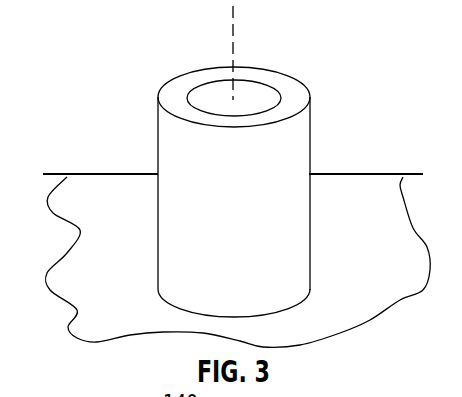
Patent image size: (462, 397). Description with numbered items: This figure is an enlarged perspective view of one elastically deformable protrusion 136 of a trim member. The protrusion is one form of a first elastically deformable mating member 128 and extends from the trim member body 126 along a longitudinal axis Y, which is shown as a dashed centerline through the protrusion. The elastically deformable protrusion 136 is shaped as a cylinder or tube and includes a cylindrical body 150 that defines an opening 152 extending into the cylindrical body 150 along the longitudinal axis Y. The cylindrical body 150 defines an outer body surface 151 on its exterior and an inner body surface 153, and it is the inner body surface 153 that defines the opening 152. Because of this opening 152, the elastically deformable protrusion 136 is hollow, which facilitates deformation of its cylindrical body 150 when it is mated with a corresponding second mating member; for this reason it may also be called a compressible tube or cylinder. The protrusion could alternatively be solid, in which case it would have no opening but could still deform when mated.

The longitudinal axis Y is at (238, 28).
The trim member body 126 is at (100, 173).
The first elastically deformable mating member 128 is at (310, 145).
The elastically deformable protrusion 136 is at (158, 141).
The cylindrical body 150 is at (290, 237).
The outer body surface 151 is at (180, 236).
The opening 152 is at (277, 96).
The inner body surface 153 is at (190, 96).